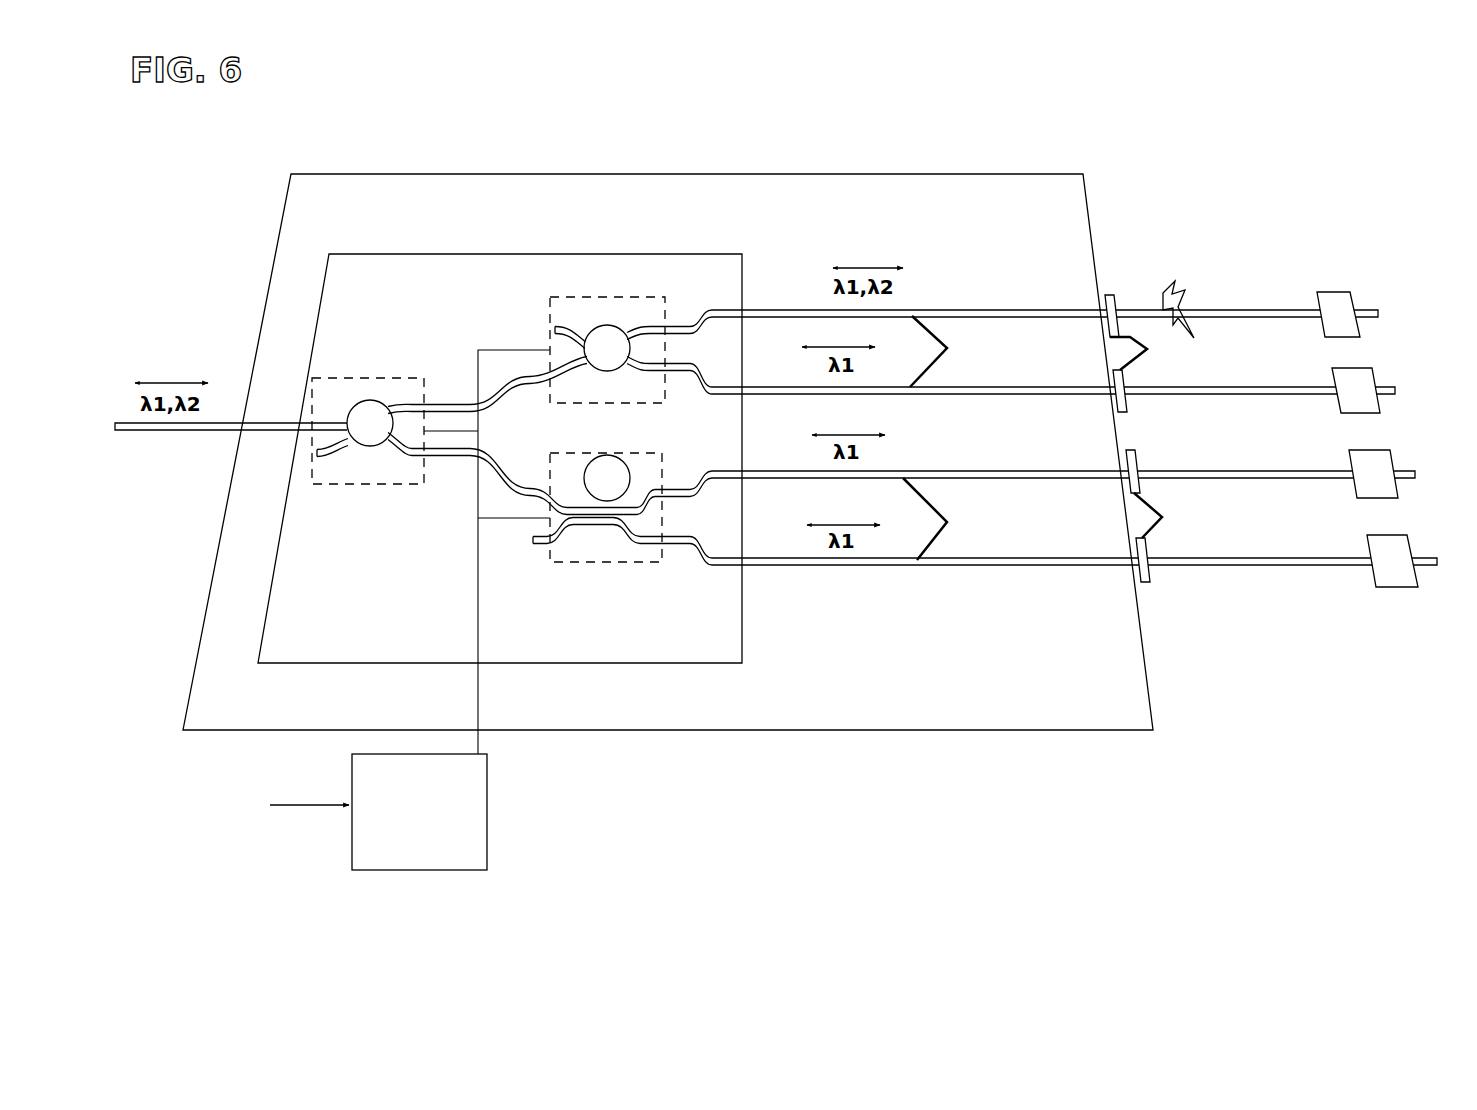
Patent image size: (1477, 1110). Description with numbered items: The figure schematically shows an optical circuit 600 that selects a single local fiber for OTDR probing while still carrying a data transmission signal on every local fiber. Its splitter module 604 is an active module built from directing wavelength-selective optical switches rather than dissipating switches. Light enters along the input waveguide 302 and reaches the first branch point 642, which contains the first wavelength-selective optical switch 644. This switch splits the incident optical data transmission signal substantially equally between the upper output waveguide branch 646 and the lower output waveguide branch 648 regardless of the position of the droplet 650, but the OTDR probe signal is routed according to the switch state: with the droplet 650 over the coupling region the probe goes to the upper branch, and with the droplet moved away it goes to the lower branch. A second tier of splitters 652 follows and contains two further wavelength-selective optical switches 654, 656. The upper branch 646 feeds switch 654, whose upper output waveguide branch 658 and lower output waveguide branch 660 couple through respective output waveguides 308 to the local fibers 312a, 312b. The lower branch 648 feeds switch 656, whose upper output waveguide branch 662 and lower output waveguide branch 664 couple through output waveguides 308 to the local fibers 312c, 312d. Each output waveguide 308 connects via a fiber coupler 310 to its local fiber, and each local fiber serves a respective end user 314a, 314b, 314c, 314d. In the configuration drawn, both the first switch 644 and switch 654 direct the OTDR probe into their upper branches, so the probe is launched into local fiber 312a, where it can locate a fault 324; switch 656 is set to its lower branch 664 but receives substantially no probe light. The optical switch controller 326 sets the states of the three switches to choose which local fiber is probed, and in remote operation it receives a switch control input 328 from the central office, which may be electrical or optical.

The optical circuit 600 is at (841, 101).
The second tier of splitters 652 is at (601, 136).
The splitter module 604 is at (407, 254).
The input waveguide 302 is at (178, 432).
The first branch point 642 is at (349, 440).
The droplet 650 is at (370, 399).
The first wavelength-selective optical switch 644 is at (375, 487).
The upper output waveguide branch 646 is at (438, 398).
The lower output waveguide branch 648 is at (435, 458).
The wavelength-selective optical switch 654 is at (607, 296).
The wavelength-selective optical switch 656 is at (567, 562).
The upper output waveguide branch 658 is at (670, 323).
The lower output waveguide branch 660 is at (690, 375).
The upper output waveguide branch 662 is at (680, 487).
The lower output waveguide branch 664 is at (682, 543).
The output waveguide 308 is at (950, 438).
The fiber coupler 310 is at (1159, 438).
The fault 324 is at (1171, 297).
The local fiber 312a is at (1258, 308).
The local fiber 312b is at (1275, 387).
The local fiber 312c is at (1283, 469).
The local fiber 312d is at (1295, 558).
The end user 314a is at (1353, 290).
The end user 314b is at (1375, 375).
The end user 314c is at (1392, 460).
The end user 314d is at (1450, 525).
The optical switch controller 326 is at (488, 810).
The switch control input 328 is at (310, 807).